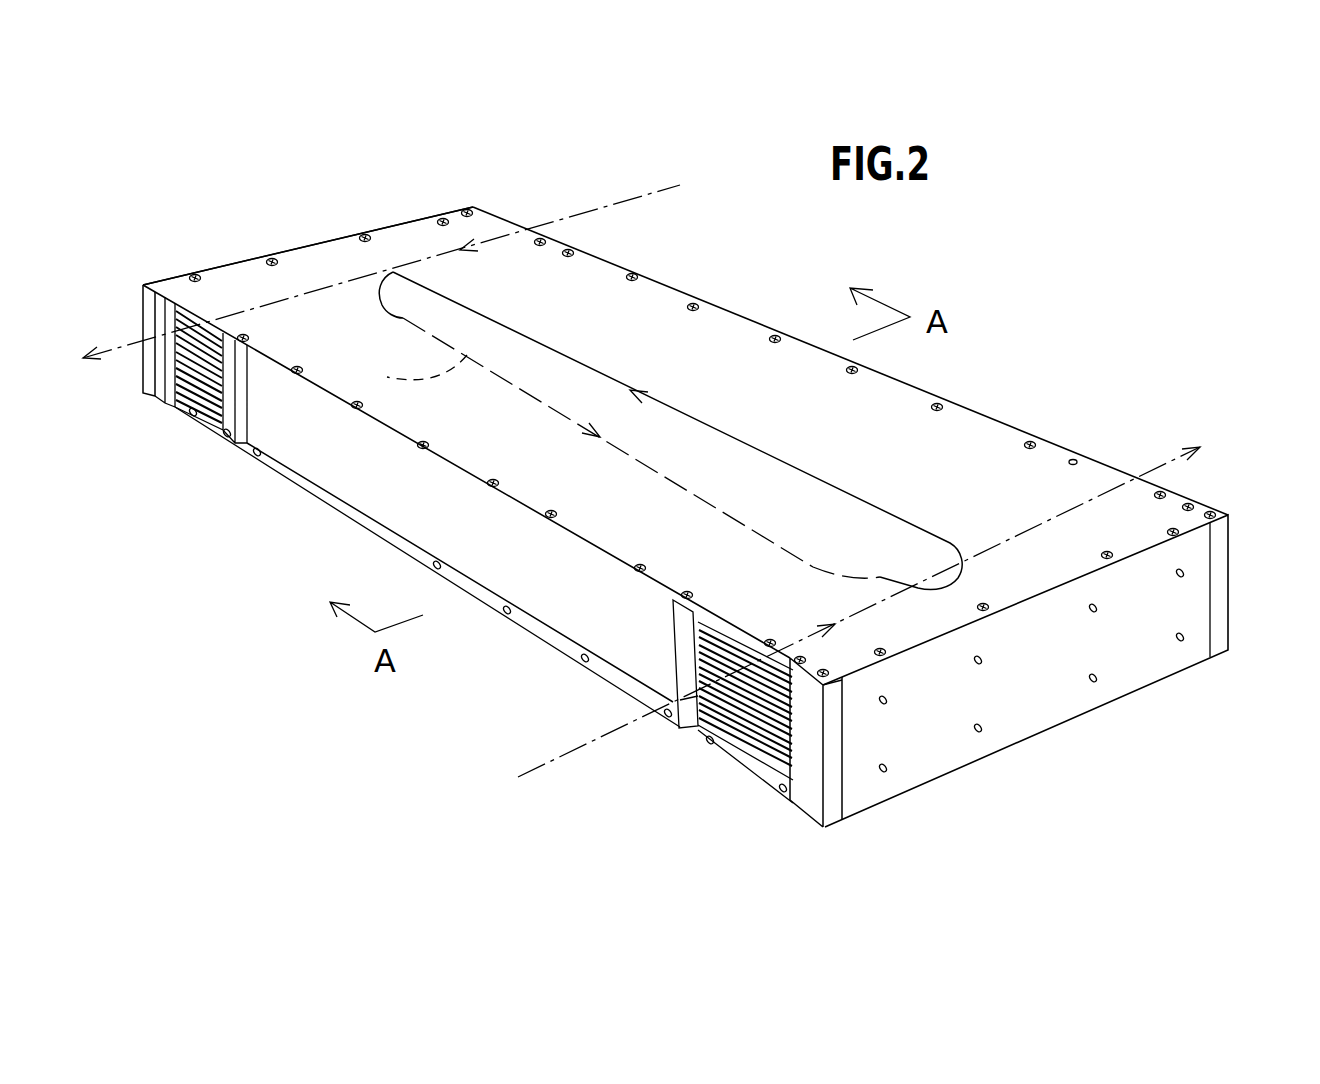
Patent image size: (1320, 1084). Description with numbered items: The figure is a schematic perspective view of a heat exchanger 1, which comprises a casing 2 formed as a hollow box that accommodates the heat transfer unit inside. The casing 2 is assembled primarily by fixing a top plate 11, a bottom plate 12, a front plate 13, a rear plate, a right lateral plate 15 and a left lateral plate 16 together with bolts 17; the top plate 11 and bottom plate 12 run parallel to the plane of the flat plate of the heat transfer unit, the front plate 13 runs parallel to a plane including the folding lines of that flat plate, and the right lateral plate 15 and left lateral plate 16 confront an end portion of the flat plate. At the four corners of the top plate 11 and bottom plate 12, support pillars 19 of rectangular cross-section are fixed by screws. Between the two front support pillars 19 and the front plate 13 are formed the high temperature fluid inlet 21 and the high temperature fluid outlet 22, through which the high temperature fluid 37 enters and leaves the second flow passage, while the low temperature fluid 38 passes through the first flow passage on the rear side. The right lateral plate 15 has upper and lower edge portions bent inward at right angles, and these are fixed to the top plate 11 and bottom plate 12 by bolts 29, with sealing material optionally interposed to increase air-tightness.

The heat exchanger 1 is at (1168, 290).
The casing 2 is at (1027, 415).
The top plate 11 is at (343, 263).
The bottom plate 12 is at (713, 750).
The front plate 13 is at (410, 512).
The right lateral plate 15 is at (1050, 703).
The left lateral plate 16 is at (297, 249).
The bolt 17 is at (553, 511).
The support pillar 19 is at (805, 812).
The high temperature fluid inlet 21 is at (730, 657).
The high temperature fluid outlet 22 is at (217, 417).
The bolt 29 is at (1107, 555).
The high temperature fluid 37 is at (670, 405).
The low temperature fluid 38 is at (407, 360).